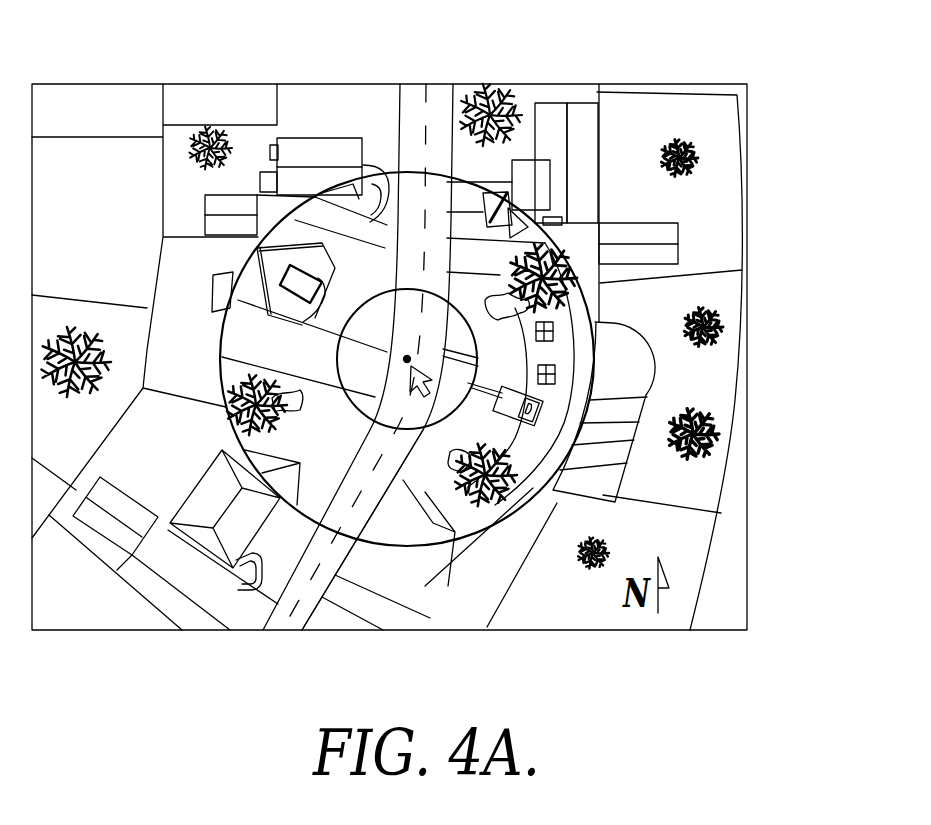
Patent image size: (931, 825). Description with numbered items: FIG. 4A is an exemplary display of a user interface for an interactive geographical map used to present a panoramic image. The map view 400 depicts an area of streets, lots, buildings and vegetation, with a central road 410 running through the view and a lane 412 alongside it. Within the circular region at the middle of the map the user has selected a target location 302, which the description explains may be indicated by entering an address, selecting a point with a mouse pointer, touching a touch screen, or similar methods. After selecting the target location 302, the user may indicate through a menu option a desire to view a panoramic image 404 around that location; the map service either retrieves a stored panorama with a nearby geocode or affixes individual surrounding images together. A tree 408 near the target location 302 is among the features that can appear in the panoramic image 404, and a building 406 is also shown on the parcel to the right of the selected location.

The map view 400 is at (583, 37).
The road 410 is at (388, 172).
The road lane 412 is at (374, 523).
The target location 302 is at (408, 357).
The tree 408 is at (518, 266).
The panoramic image 404 is at (600, 300).
The building 406 is at (562, 455).